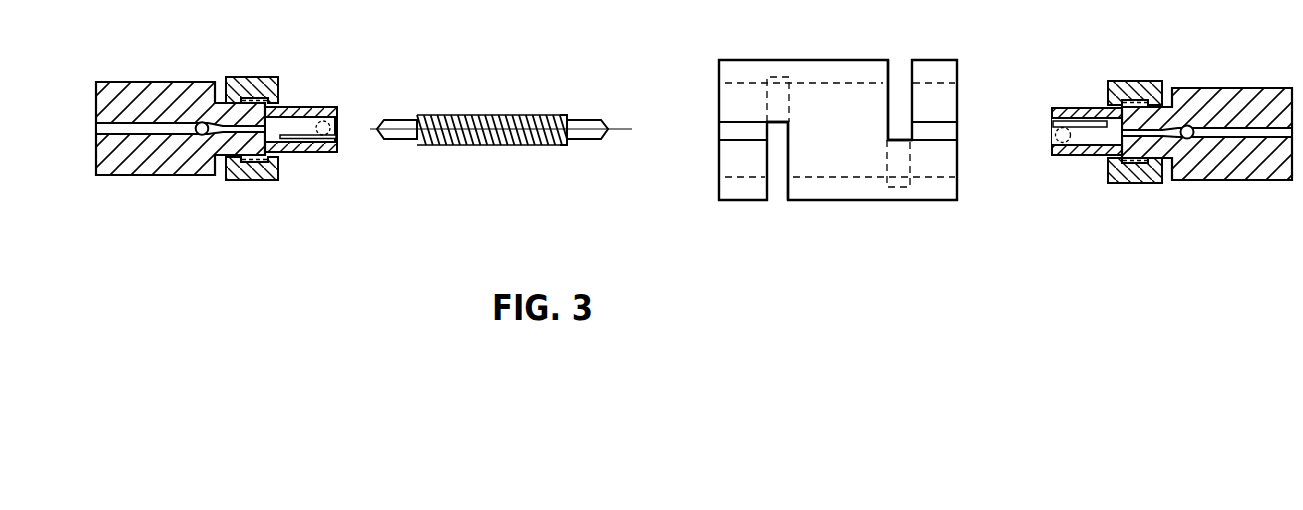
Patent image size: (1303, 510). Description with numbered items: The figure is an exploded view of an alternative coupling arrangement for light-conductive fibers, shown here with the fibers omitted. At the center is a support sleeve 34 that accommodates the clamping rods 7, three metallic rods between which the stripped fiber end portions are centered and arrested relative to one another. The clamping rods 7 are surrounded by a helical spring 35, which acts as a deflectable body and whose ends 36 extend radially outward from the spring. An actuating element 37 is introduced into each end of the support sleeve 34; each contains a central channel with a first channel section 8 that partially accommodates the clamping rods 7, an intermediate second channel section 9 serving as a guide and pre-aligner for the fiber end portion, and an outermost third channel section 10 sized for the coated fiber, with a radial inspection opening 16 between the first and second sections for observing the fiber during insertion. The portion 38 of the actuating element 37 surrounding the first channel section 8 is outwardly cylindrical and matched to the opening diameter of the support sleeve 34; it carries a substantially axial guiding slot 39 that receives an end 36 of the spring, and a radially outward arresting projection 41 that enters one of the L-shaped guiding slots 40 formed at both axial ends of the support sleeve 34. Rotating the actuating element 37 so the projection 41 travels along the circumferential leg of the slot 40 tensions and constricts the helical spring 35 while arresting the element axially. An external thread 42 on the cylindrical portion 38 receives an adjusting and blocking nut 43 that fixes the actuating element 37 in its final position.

The clamping rod 7 is at (594, 120).
The first channel section 8 is at (290, 127).
The second channel section 9 is at (233, 125).
The third channel section 10 is at (125, 128).
The inspection opening 16 is at (202, 135).
The support sleeve 34 is at (840, 60).
The helical spring 35 is at (442, 115).
The spring end 36 is at (562, 118).
The actuating element 37 is at (135, 98).
The cylindrical portion 38 is at (320, 108).
The guiding slot 39 is at (310, 142).
The L-shaped guiding slot 40 is at (732, 127).
The arresting projection 41 is at (1060, 143).
The external thread 42 is at (277, 100).
The adjusting and blocking nut 43 is at (260, 78).